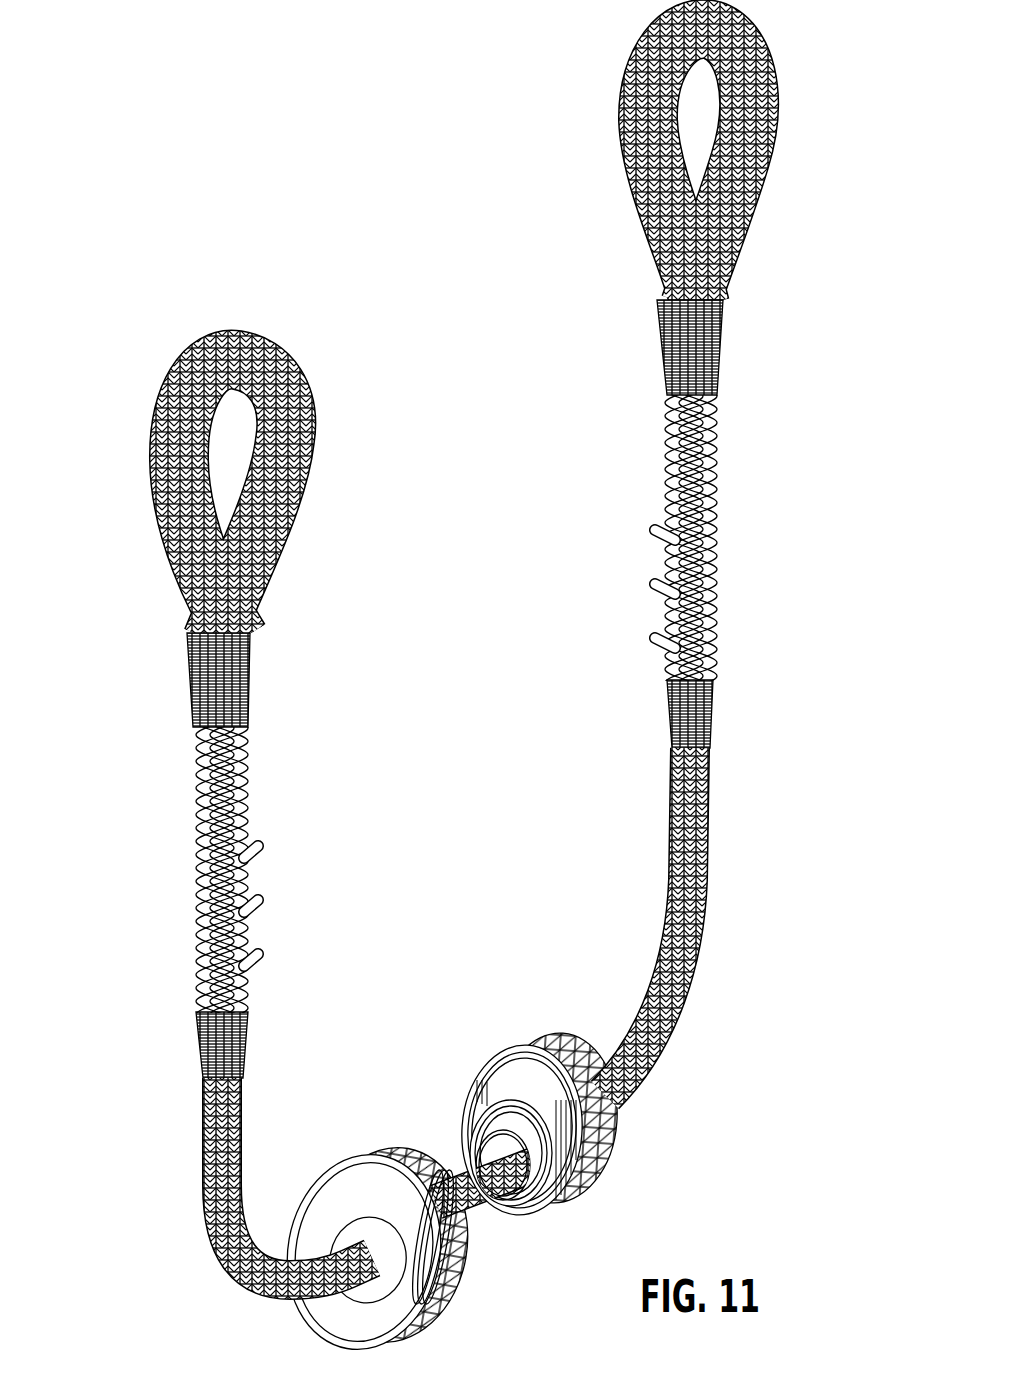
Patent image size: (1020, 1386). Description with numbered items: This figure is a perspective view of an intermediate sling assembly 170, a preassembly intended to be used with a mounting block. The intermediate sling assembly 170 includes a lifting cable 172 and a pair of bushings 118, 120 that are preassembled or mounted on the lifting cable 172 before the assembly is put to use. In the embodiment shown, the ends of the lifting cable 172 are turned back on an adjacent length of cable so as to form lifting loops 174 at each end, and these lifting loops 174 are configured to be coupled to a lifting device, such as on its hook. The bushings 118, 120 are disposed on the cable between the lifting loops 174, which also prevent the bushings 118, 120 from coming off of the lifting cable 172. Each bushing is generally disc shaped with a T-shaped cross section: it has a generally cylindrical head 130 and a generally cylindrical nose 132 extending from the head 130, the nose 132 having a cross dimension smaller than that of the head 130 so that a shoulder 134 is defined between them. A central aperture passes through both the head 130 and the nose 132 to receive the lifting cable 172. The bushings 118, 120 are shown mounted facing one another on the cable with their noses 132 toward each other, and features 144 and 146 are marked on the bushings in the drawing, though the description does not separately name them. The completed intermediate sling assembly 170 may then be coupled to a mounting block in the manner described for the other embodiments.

The intermediate sling assembly 170 is at (174, 234).
The lifting loops 174 is at (152, 418).
The lifting cable 172 is at (217, 1246).
The bushing 118 is at (335, 1140).
The bushing 120 is at (512, 1024).
The head 130 is at (358, 1156).
The nose 132 is at (461, 1140).
The shoulder 134 is at (478, 1093).
The back edge 144 is at (575, 1050).
The hub lip 146 is at (508, 1197).